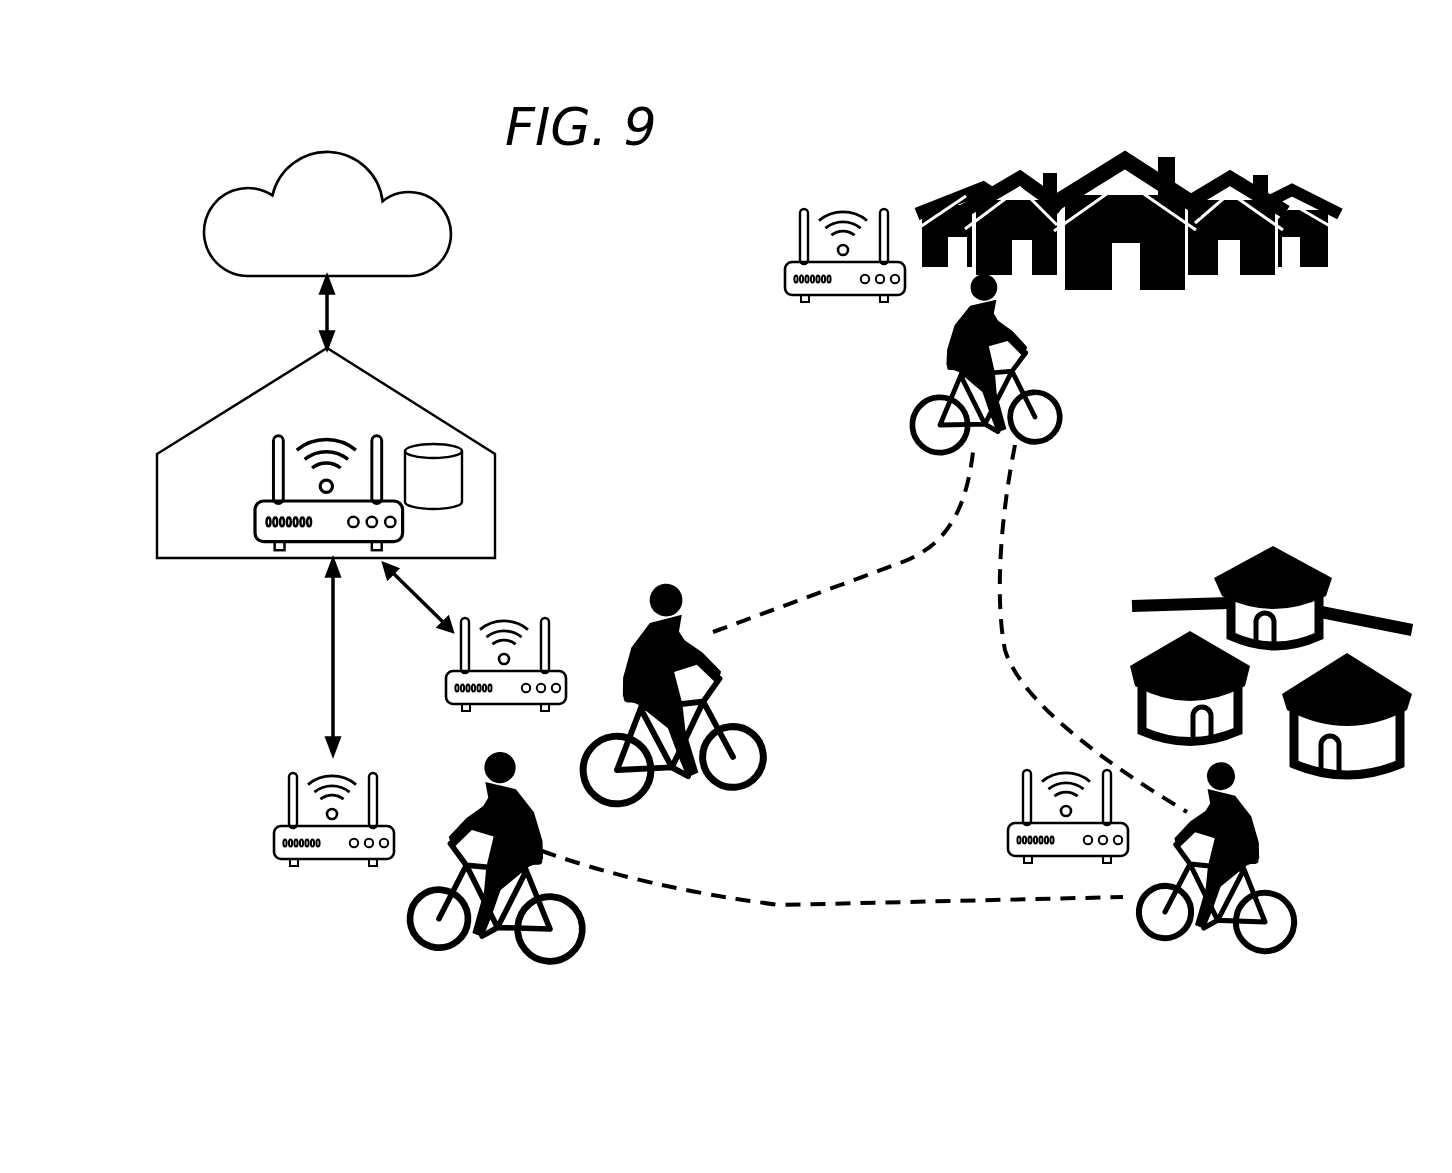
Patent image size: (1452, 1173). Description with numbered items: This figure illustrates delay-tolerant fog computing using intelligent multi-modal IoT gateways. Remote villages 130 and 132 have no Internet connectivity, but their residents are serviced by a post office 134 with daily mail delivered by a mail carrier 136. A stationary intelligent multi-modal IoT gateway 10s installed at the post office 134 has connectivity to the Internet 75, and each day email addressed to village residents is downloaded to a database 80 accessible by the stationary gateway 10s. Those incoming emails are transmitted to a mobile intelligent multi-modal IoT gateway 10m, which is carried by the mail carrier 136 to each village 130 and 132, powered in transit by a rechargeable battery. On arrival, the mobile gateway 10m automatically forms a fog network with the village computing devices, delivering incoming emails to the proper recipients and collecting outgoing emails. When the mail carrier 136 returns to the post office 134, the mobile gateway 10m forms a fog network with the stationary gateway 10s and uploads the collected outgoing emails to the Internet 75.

The Internet 75 is at (315, 239).
The post office 134 is at (403, 389).
The stationary intelligent multi-modal IoT gateway 10s is at (256, 506).
The database 80 is at (459, 475).
The mobile intelligent multi-modal IoT gateway 10m is at (549, 619).
The mail carrier 136 is at (403, 908).
The remote village 130 is at (1098, 138).
The remote village 132 is at (1178, 532).